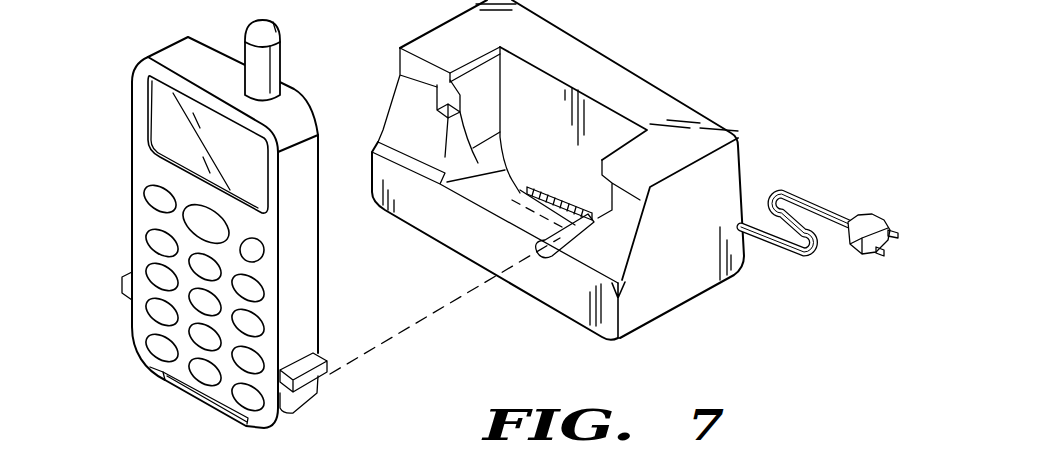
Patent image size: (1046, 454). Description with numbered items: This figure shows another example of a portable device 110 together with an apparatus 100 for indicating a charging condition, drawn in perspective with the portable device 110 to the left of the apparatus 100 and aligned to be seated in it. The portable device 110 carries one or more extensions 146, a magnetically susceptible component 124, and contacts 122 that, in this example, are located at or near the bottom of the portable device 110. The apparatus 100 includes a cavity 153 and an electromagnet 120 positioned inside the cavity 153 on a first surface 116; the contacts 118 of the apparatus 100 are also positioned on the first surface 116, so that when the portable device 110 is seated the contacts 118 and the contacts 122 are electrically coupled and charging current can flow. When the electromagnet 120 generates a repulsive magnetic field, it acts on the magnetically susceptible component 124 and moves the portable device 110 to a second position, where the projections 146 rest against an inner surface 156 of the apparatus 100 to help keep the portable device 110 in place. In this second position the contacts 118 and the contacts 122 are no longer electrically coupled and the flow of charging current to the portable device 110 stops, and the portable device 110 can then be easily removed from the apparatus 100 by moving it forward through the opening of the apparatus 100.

The apparatus 100 is at (635, 170).
The portable device 110 is at (220, 237).
The first surface 116 is at (575, 199).
The contacts 118 is at (535, 185).
The electromagnet 120 is at (506, 191).
The contacts 122 is at (205, 407).
The magnetically susceptible component 124 is at (164, 377).
The extensions 146 is at (121, 280).
The cavity 153 is at (496, 165).
The inner surface 156 is at (480, 72).